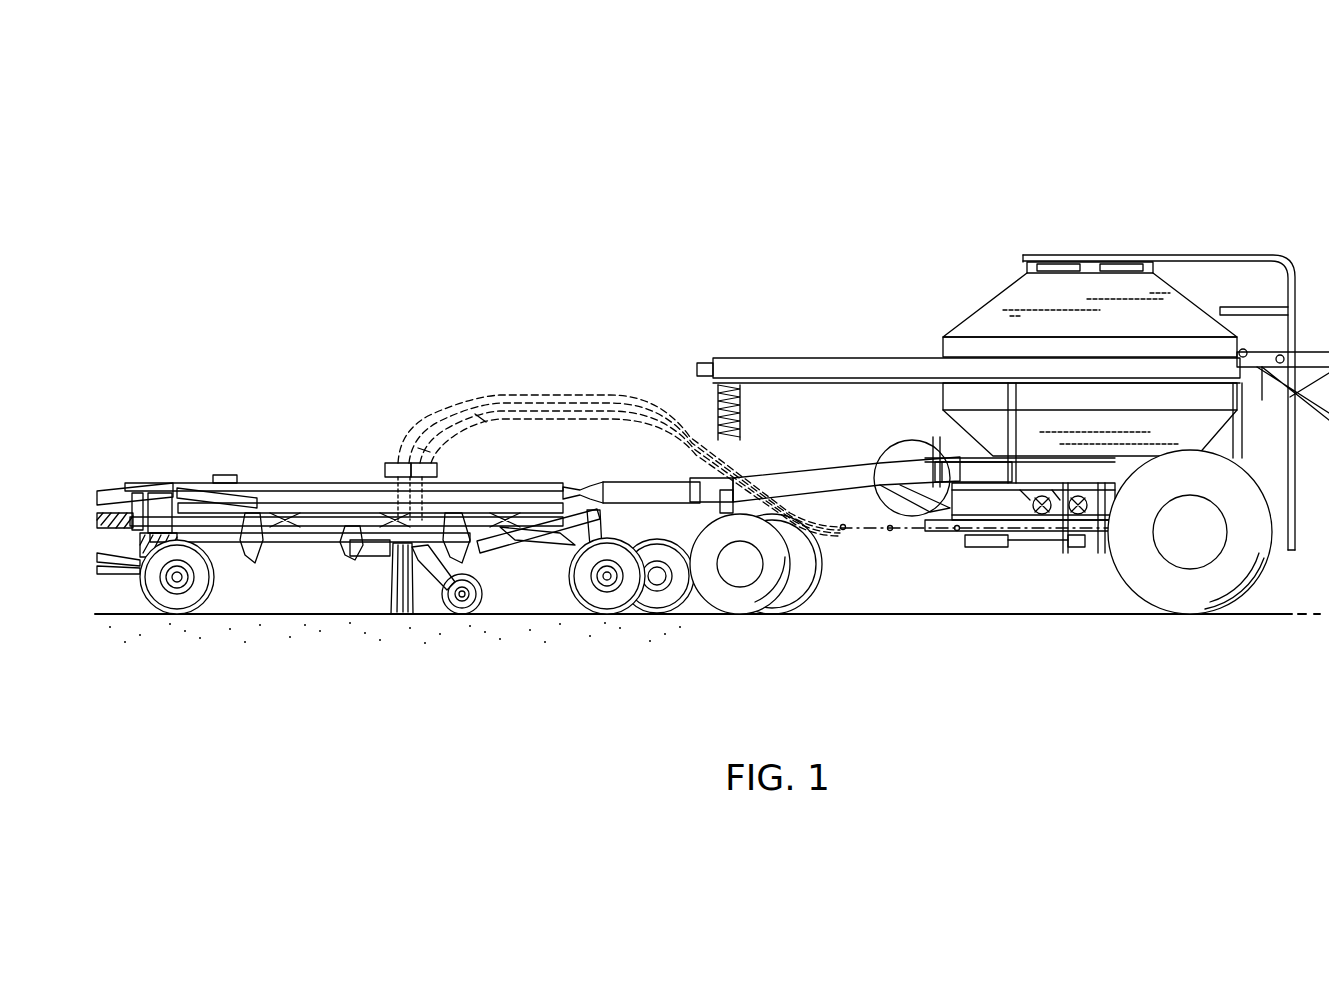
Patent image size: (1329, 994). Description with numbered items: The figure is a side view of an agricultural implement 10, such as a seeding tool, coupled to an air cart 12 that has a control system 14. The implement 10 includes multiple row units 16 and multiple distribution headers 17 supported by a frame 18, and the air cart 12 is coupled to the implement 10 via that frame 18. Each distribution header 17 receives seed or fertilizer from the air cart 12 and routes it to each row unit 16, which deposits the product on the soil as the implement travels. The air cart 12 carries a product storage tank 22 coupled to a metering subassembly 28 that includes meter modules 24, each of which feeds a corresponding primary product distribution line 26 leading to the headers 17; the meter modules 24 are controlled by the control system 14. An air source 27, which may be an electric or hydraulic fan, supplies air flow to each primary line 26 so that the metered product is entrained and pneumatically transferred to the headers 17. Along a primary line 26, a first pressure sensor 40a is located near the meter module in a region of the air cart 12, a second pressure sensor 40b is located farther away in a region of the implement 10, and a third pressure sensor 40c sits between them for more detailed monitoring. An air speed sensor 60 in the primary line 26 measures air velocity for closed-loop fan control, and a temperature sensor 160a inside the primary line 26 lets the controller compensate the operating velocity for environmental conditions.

The agricultural implement 10 is at (342, 410).
The air cart 12 is at (995, 235).
The control system 14 is at (1003, 556).
The row unit 16 is at (380, 600).
The distribution header 17 is at (395, 462).
The frame 18 is at (200, 483).
The product storage tank 22 is at (1010, 298).
The meter module 24 is at (1095, 515).
The primary product distribution line 26 is at (605, 396).
The air source 27 is at (890, 447).
The metering subassembly 28 is at (1003, 503).
The first pressure sensor 40a is at (953, 545).
The second pressure sensor 40b is at (425, 450).
The third pressure sensor 40c is at (480, 418).
The air speed sensor 60 is at (882, 545).
The temperature sensor 160a is at (833, 545).